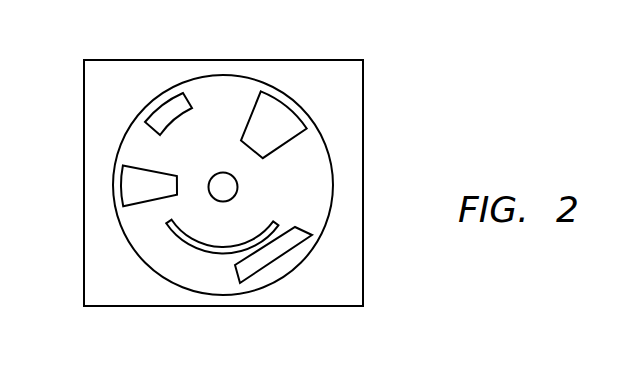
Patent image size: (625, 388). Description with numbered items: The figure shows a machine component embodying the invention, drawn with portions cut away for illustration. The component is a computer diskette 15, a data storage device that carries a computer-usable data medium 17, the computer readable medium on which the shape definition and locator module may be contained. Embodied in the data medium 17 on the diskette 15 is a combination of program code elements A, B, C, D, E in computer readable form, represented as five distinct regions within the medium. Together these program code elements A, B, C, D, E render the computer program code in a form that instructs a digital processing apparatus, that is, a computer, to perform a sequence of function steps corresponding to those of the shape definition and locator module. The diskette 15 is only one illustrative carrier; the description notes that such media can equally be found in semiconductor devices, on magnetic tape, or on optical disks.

The computer diskette 15 is at (363, 153).
The computer-usable data medium 17 is at (315, 217).
The program code element A is at (277, 112).
The program code element B is at (172, 107).
The program code element C is at (132, 184).
The program code element D is at (183, 240).
The program code element E is at (278, 260).